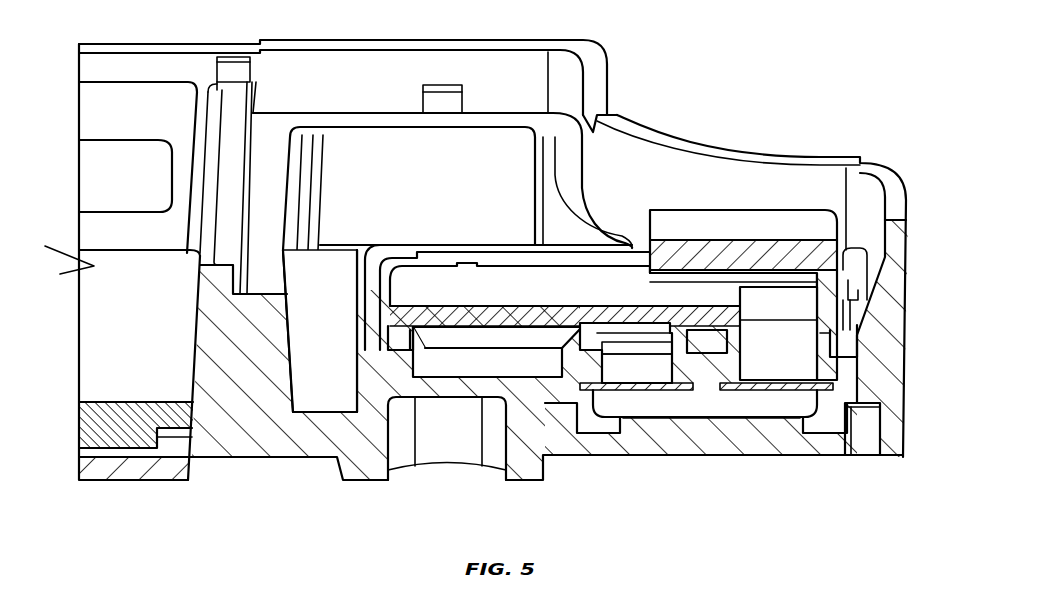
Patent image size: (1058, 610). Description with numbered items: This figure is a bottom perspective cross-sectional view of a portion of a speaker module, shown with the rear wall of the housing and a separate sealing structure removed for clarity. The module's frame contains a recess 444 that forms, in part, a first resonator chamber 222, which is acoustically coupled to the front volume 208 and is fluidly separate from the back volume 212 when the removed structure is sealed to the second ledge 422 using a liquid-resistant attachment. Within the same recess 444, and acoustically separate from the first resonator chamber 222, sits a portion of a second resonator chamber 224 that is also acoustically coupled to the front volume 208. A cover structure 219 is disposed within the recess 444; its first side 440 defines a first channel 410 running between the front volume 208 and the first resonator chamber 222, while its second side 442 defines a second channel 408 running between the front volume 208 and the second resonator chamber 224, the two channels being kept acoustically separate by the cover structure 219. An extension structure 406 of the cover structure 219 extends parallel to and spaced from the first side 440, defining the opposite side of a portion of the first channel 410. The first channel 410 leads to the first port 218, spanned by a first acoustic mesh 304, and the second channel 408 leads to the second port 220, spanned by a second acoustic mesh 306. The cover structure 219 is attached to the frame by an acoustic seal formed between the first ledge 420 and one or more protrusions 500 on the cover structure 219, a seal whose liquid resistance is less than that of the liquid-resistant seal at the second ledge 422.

The front volume 208 is at (844, 495).
The back volume 212 is at (108, 281).
The first port 218 is at (639, 378).
The cover structure 219 is at (625, 287).
The second port 220 is at (745, 405).
The first resonator chamber 222 is at (374, 128).
The second resonator chamber 224 is at (452, 359).
The first acoustic mesh 304 is at (665, 392).
The second acoustic mesh 306 is at (790, 369).
The extension structure 406 is at (780, 218).
The second channel 408 is at (629, 353).
The first channel 410 is at (729, 256).
The first ledge 420 is at (403, 356).
The second ledge 422 is at (275, 133).
The first side 440 is at (493, 278).
The second side 442 is at (605, 340).
The recess 444 is at (531, 70).
The protrusion 500 is at (393, 340).